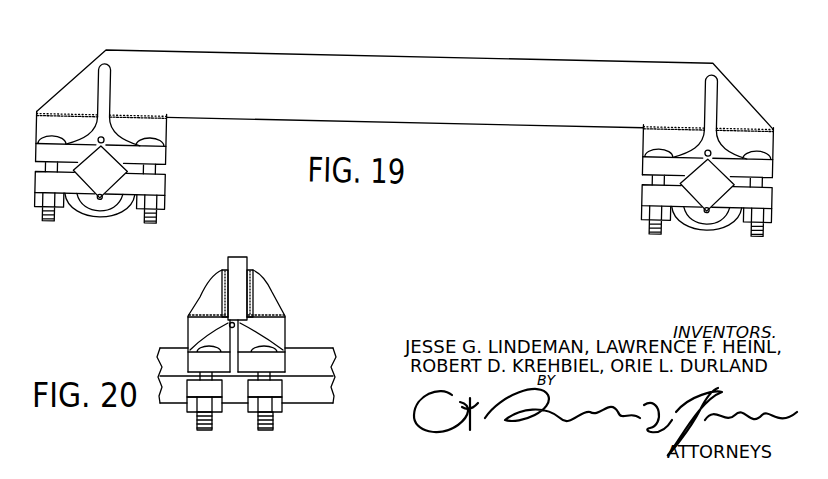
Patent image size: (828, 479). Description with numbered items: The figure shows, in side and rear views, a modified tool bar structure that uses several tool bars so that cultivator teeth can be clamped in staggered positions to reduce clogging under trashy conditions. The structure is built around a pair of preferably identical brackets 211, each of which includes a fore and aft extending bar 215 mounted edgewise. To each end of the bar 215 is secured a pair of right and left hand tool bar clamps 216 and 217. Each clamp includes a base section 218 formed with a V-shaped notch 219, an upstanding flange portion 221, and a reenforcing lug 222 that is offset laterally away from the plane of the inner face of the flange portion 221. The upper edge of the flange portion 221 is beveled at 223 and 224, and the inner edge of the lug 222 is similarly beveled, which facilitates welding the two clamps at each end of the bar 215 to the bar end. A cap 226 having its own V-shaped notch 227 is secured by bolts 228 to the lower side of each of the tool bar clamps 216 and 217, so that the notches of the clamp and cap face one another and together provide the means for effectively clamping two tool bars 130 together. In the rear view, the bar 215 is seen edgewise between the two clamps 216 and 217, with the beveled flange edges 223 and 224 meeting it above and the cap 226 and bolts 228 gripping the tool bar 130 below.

In FIG. 19, the tool bar 130 is at (97, 179).
In FIG. 20, the tool bar 130 is at (325, 368).
In FIG. 19, the bracket 211 is at (414, 46).
In FIG. 19, the fore and aft extending bar 215 is at (499, 106).
In FIG. 20, the fore and aft extending bar 215 is at (237, 265).
In FIG. 19, the right hand tool bar clamp 216 is at (136, 121).
In FIG. 20, the right hand tool bar clamp 216 is at (200, 287).
In FIG. 20, the left hand tool bar clamp 217 is at (283, 294).
In FIG. 19, the base section 218 is at (648, 158).
In FIG. 20, the base section 218 is at (193, 362).
In FIG. 19, the V-shaped notch 219 is at (102, 137).
In FIG. 19, the upstanding flange portion 221 is at (160, 133).
In FIG. 20, the upstanding flange portion 221 is at (228, 331).
In FIG. 19, the reenforcing lug 222 is at (717, 78).
In FIG. 20, the reenforcing lug 222 is at (217, 281).
In FIG. 20, the bevel 223 is at (212, 317).
In FIG. 20, the bevel 224 is at (229, 325).
In FIG. 19, the cap 226 is at (150, 181).
In FIG. 20, the cap 226 is at (250, 417).
In FIG. 19, the V-shaped notch 227 is at (113, 182).
In FIG. 19, the bolt 228 is at (52, 223).